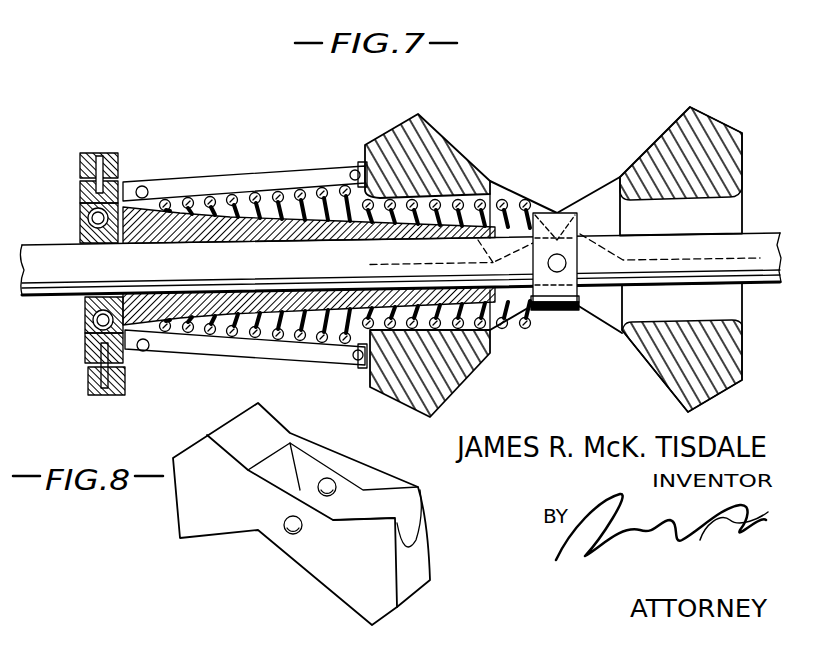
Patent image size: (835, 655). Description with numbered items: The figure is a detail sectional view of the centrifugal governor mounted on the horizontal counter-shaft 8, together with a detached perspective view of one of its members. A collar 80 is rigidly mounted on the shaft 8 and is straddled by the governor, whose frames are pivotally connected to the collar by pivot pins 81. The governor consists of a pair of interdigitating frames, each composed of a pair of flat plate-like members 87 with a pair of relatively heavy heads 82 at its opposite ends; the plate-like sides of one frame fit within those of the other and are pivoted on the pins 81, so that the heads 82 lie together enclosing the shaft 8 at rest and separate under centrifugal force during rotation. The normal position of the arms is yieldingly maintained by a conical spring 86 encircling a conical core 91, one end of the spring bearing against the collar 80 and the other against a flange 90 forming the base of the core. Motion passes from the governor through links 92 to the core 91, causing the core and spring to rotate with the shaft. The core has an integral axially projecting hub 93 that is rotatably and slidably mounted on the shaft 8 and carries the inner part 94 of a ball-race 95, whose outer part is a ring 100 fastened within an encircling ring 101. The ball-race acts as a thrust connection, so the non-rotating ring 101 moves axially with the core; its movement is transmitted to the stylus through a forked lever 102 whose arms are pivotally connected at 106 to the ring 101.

In FIG. 7, the counter-shaft 8 is at (400, 264).
In FIG. 7, the collar 80 is at (557, 312).
In FIG. 7, the pivot pins 81 is at (543, 257).
In FIG. 7, the heads 82 is at (460, 357).
In FIG. 8, the heads 82 is at (301, 514).
In FIG. 7, the conical spring 86 is at (302, 195).
In FIG. 7, the flat plate-like members 87 is at (529, 194).
In FIG. 8, the flat plate-like members 87 is at (350, 490).
In FIG. 7, the flange 90 is at (125, 183).
In FIG. 7, the conical core 91 is at (220, 200).
In FIG. 7, the links 92 is at (257, 182).
In FIG. 7, the hub 93 is at (82, 240).
In FIG. 7, the inner part of ball-race 94 is at (85, 320).
In FIG. 7, the ball-race 95 is at (80, 198).
In FIG. 7, the ring 100 is at (88, 336).
In FIG. 7, the encircling ring 101 is at (92, 360).
In FIG. 7, the forked lever 102 is at (112, 142).
In FIG. 7, the pivotal connection 106 is at (96, 156).